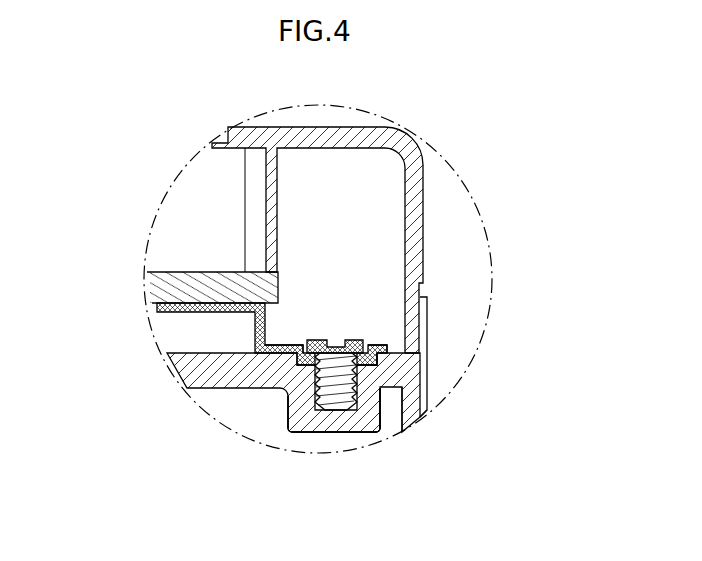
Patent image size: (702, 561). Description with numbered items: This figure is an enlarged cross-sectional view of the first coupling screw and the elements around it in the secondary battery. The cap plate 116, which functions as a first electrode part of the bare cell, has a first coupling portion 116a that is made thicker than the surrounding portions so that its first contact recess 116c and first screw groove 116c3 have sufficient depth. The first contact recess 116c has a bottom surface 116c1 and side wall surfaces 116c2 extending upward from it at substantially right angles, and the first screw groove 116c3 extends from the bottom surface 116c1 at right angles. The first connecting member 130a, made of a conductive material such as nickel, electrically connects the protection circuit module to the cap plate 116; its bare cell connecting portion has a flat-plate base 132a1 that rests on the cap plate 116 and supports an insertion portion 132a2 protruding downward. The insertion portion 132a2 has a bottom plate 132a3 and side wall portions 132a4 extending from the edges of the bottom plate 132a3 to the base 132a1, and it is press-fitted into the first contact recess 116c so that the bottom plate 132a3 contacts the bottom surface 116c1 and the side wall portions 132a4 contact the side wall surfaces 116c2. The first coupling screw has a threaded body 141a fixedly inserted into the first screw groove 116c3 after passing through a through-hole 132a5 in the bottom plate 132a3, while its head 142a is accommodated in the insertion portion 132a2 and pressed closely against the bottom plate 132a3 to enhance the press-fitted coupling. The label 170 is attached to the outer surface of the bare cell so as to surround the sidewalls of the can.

The cap plate 116 is at (183, 367).
The first coupling portion 116a is at (383, 435).
The first contact recess 116c is at (352, 340).
The bottom surface 116c1 is at (311, 377).
The side wall surfaces 116c2 is at (357, 342).
The first screw groove 116c3 is at (328, 412).
The first connecting member 130a is at (250, 326).
The base 132a1 is at (311, 343).
The insertion portion 132a2 is at (303, 355).
The bottom plate 132a3 is at (423, 415).
The side wall portions 132a4 is at (380, 362).
The through-hole 132a5 is at (347, 340).
The threaded body 141a is at (375, 425).
The head 142a is at (313, 340).
The label 170 is at (422, 335).